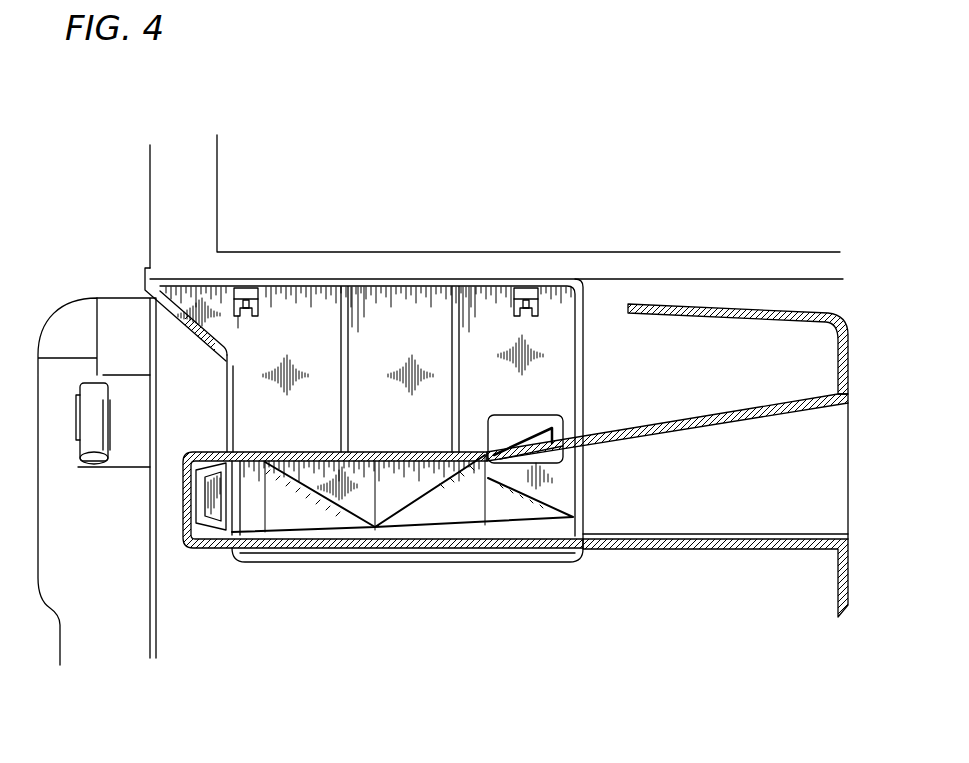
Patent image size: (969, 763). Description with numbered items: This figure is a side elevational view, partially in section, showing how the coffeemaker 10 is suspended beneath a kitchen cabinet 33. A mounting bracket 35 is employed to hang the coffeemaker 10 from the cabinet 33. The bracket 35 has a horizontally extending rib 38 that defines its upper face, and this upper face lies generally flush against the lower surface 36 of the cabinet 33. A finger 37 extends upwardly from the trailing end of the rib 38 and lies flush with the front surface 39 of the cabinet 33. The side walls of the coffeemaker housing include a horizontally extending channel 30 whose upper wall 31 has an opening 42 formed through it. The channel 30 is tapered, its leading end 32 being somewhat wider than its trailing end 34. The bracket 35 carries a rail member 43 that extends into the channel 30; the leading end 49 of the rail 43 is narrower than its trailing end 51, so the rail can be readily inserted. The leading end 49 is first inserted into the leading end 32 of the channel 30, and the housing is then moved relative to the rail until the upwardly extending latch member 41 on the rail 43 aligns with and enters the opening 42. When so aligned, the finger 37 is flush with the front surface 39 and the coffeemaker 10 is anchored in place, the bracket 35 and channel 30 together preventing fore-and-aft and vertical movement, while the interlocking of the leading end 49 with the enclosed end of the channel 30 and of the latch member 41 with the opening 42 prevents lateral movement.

The coffeemaker 10 is at (40, 653).
The channel 30 is at (690, 540).
The upper wall 31 is at (640, 435).
The leading end 32 is at (777, 410).
The kitchen cabinet 33 is at (136, 138).
The trailing end 34 is at (292, 466).
The mounting bracket 35 is at (190, 387).
The lower surface 36 is at (432, 280).
The finger 37 is at (143, 277).
The rib 38 is at (368, 280).
The front surface 39 is at (150, 188).
The latch member 41 is at (537, 423).
The opening 42 is at (540, 453).
The rail member 43 is at (403, 523).
The leading end 49 is at (227, 548).
The trailing end 51 is at (560, 488).